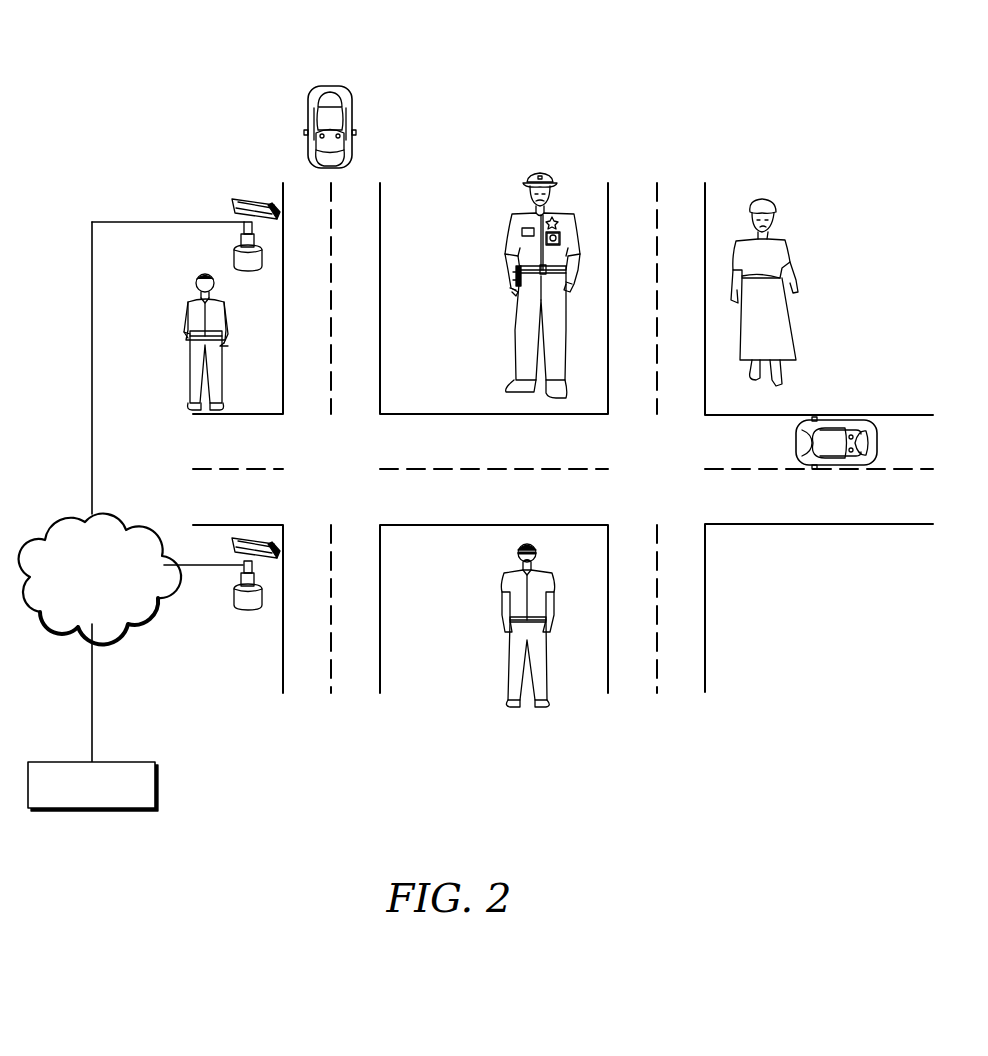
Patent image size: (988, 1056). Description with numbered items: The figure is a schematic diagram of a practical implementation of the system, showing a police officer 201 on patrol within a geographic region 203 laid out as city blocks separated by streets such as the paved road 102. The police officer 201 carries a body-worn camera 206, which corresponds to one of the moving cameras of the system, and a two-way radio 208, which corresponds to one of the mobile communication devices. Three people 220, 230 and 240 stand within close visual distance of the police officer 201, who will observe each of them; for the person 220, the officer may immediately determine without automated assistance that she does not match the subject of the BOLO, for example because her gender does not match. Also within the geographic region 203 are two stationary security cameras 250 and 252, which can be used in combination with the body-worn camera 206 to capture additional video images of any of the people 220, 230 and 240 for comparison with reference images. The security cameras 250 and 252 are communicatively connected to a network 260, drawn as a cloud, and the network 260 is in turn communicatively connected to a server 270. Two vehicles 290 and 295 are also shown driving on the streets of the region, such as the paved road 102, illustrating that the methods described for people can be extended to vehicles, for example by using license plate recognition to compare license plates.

The geographic region 203 is at (101, 27).
The paved road 102 is at (362, 276).
The vehicle 290 is at (352, 128).
The vehicle 295 is at (832, 420).
The stationary security camera 250 is at (236, 258).
The stationary security camera 252 is at (250, 611).
The network 260 is at (79, 512).
The server 270 is at (125, 762).
The person 240 is at (188, 320).
The police officer 201 is at (526, 213).
The body-worn camera 206 is at (558, 237).
The two-way radio 208 is at (514, 286).
The person 220 is at (794, 272).
The person 230 is at (502, 612).